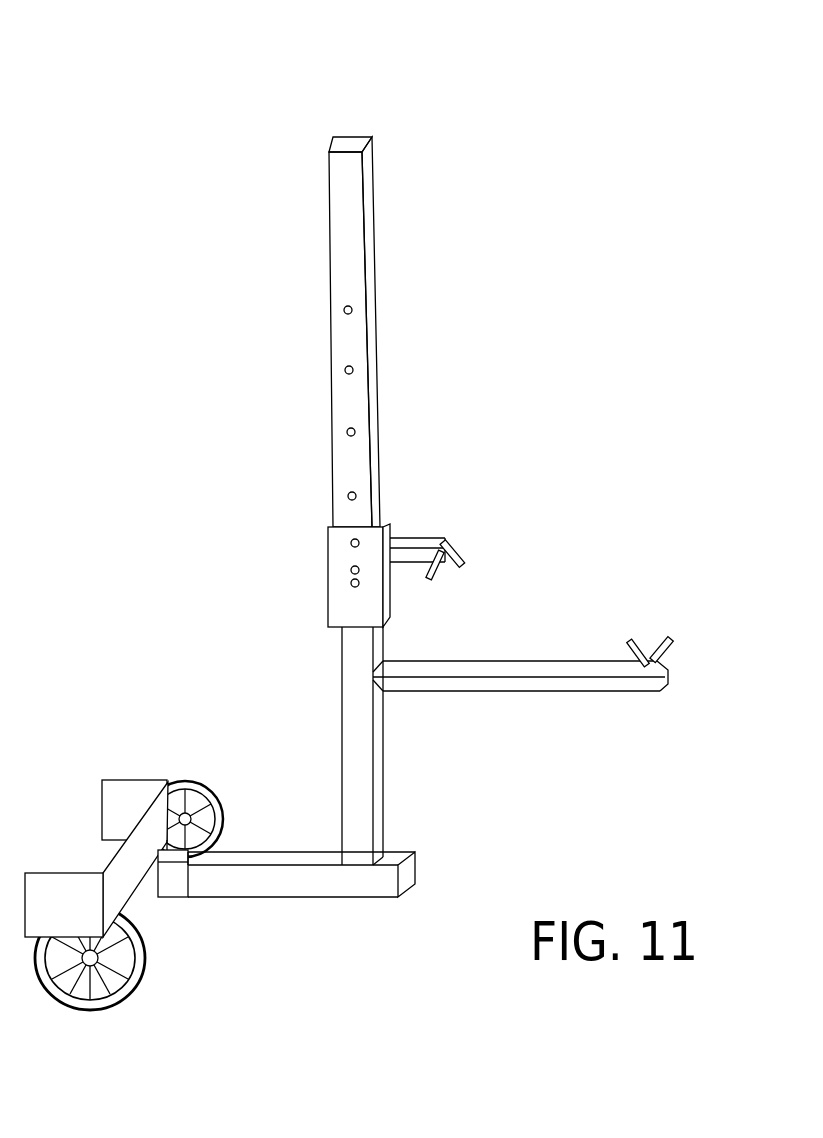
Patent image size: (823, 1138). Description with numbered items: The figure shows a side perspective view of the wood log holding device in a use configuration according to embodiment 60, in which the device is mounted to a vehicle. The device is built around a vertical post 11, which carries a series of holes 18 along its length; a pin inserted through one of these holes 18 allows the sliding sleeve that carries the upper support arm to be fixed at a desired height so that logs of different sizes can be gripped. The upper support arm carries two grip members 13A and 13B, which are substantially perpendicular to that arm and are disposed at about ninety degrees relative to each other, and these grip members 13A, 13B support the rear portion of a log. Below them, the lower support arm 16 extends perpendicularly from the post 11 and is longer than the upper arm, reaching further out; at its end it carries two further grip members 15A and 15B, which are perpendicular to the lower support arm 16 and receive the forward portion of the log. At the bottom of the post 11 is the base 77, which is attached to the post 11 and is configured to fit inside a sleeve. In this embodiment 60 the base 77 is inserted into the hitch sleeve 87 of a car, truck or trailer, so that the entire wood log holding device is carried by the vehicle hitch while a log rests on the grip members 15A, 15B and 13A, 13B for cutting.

The wood log holding device embodiment 60 is at (369, 514).
The post 11 is at (348, 271).
The holes 18 is at (356, 497).
The grip member 13A is at (463, 558).
The grip member 13B is at (437, 580).
The lower support arm 16 is at (525, 683).
The grip member 15A is at (680, 643).
The grip member 15B is at (638, 672).
The base 77 is at (298, 880).
The hitch sleeve 87 is at (173, 887).